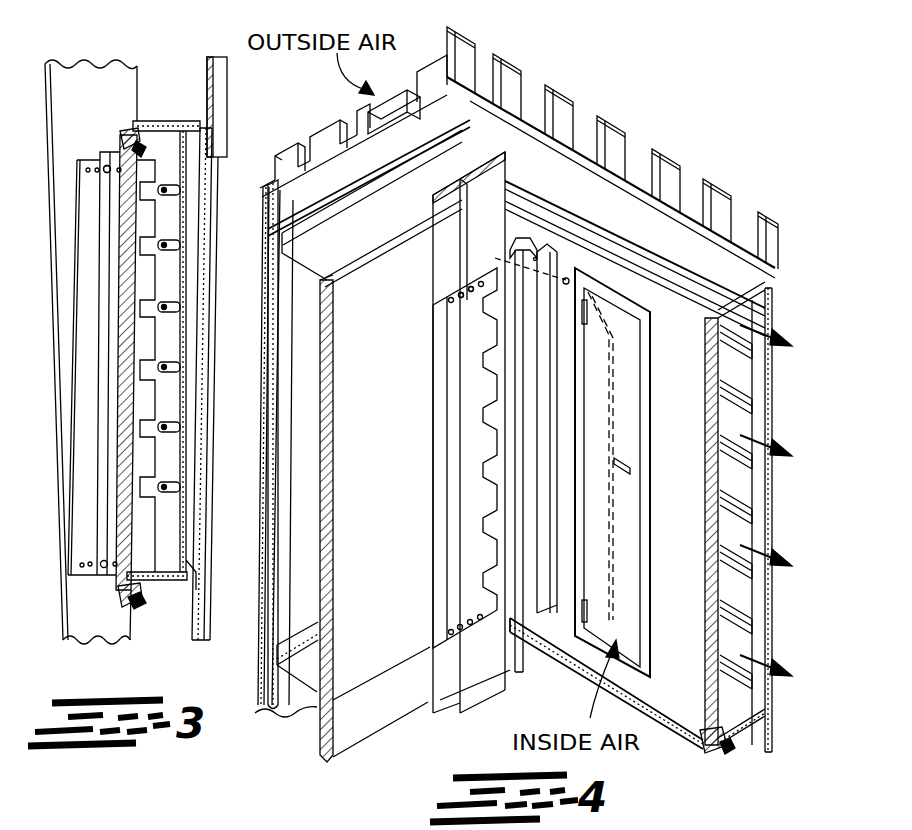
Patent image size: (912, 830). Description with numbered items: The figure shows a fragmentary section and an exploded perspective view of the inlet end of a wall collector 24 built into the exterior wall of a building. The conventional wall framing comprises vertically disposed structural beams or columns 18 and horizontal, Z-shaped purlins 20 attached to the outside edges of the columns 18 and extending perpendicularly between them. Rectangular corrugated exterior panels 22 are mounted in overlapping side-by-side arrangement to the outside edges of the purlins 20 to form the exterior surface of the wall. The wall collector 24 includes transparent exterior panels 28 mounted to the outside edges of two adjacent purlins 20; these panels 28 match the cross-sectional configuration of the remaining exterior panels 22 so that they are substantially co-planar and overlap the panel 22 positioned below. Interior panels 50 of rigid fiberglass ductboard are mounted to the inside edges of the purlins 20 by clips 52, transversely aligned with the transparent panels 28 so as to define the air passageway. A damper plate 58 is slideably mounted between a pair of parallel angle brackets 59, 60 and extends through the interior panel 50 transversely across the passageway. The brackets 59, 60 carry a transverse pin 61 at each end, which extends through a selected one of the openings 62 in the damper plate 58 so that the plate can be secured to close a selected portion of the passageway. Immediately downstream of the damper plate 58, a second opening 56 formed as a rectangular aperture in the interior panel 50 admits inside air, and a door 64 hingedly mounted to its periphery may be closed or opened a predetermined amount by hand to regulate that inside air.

In FIG. 3, the structural beams or columns 18 is at (102, 84).
In FIG. 4, the structural beams or columns 18 is at (502, 227).
In FIG. 3, the purlins 20 is at (165, 121).
In FIG. 4, the purlins 20 is at (385, 233).
In FIG. 3, the exterior panels 22 is at (228, 90).
In FIG. 4, the exterior panels 22 is at (357, 160).
In FIG. 3, the wall collector 24 is at (226, 286).
In FIG. 4, the wall collector 24 is at (752, 530).
In FIG. 3, the transparent exterior panels 28 is at (222, 197).
In FIG. 4, the transparent exterior panels 28 is at (760, 300).
In FIG. 4, the interior panels 50 is at (400, 461).
In FIG. 3, the clips 52 is at (128, 131).
In FIG. 4, the clips 52 is at (697, 740).
In FIG. 4, the second opening 56 is at (623, 410).
In FIG. 3, the damper plate 58 is at (85, 418).
In FIG. 4, the damper plate 58 is at (457, 470).
In FIG. 4, the angle bracket 59 is at (530, 240).
In FIG. 3, the angle bracket 60 is at (107, 253).
In FIG. 4, the angle bracket 60 is at (560, 237).
In FIG. 3, the transverse pin 61 is at (107, 163).
In FIG. 4, the transverse pin 61 is at (569, 277).
In FIG. 3, the openings 62 is at (97, 173).
In FIG. 4, the openings 62 is at (472, 292).
In FIG. 4, the door 64 is at (603, 542).